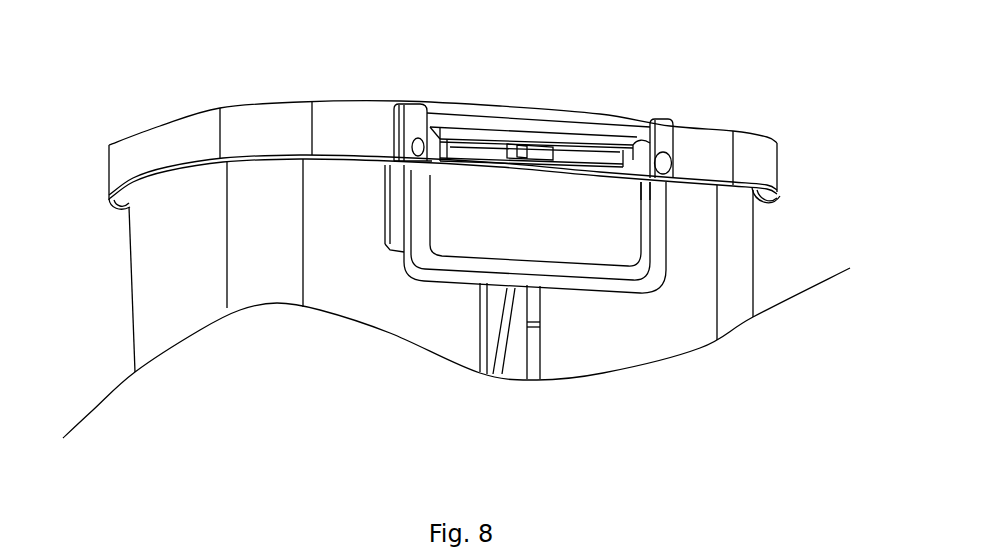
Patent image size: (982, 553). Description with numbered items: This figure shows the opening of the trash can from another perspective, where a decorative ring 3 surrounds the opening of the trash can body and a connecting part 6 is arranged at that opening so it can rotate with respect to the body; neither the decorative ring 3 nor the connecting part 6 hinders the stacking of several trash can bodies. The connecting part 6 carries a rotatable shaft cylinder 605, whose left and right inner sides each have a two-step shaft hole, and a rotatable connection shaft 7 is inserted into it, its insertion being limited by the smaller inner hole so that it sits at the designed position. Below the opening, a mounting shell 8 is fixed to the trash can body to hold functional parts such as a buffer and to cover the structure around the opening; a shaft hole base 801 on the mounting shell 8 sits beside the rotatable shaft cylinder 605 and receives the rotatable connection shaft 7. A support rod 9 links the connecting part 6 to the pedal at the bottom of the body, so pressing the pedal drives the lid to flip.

The decorative ring 3 is at (183, 145).
The connecting part 6 is at (548, 118).
The rotatable connection shaft 7 is at (392, 114).
The rotatable shaft cylinder 605 is at (650, 120).
The mounting shell 8 is at (543, 240).
The shaft hole base 801 is at (640, 143).
The support rod 9 is at (503, 357).